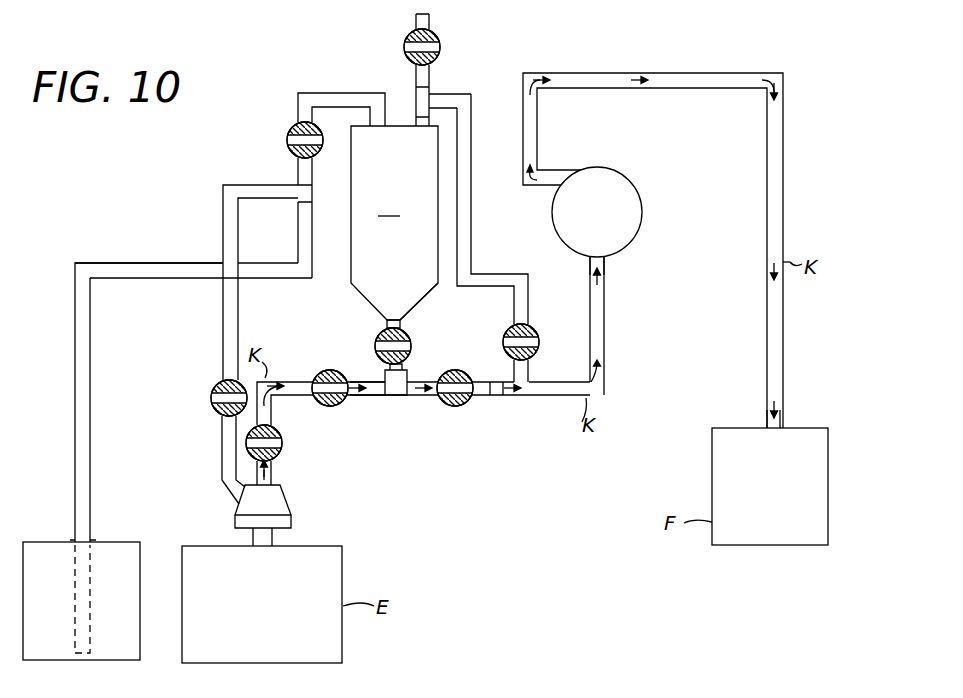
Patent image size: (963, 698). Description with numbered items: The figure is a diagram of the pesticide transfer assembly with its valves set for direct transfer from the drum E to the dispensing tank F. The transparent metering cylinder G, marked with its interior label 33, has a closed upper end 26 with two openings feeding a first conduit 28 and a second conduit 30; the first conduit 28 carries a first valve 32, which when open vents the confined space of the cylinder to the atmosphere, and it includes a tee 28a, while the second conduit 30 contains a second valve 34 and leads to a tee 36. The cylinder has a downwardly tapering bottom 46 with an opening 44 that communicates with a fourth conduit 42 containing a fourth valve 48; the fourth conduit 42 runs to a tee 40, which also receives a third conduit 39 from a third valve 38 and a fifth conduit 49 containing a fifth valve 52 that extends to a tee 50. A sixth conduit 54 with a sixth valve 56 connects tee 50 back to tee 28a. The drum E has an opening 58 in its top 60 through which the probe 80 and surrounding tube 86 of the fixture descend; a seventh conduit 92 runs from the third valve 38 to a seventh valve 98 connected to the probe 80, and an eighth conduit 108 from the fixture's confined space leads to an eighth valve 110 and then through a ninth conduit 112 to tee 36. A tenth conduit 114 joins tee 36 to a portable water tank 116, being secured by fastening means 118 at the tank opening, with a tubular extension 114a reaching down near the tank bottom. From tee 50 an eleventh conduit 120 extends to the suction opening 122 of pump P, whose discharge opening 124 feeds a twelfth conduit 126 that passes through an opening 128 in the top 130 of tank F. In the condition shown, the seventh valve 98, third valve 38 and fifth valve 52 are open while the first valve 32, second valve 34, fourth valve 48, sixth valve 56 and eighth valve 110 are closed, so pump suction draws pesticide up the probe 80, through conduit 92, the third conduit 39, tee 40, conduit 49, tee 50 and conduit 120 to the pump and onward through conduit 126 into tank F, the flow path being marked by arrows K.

The closed upper end 26 is at (394, 223).
The first conduit 28 is at (415, 70).
The tee 28a is at (433, 101).
The second conduit 30 is at (330, 92).
The first valve 32 is at (438, 38).
The gas space 33 is at (406, 248).
The second valve 34 is at (287, 150).
The tee 36 is at (297, 204).
The third valve 38 is at (324, 406).
The third conduit 39 is at (370, 397).
The tee 40 is at (398, 397).
The fourth conduit 42 is at (385, 326).
The opening 44 is at (403, 326).
The downwardly tapering bottom 46 is at (428, 292).
The fourth valve 48 is at (380, 362).
The fifth conduit 49 is at (430, 397).
The tee 50 is at (532, 397).
The fifth valve 52 is at (455, 406).
The sixth conduit 54 is at (473, 246).
The sixth valve 56 is at (531, 328).
The opening 58 is at (274, 542).
The top 60 is at (335, 548).
The probe 80 is at (274, 474).
The tube 86 is at (250, 535).
The seventh conduit 92 is at (287, 378).
The seventh valve 98 is at (284, 446).
The eighth conduit 108 is at (221, 472).
The eighth valve 110 is at (215, 415).
The ninth conduit 112 is at (222, 338).
The tenth conduit 114 is at (257, 282).
The tubular extension 114a is at (92, 656).
The water containing tank 116 is at (112, 541).
The fastening means 118 is at (70, 538).
The eleventh conduit 120 is at (606, 336).
The suction opening 122 is at (606, 258).
The discharge opening 124 is at (581, 173).
The twelfth conduit 126 is at (685, 92).
The opening 128 is at (782, 426).
The top 130 is at (824, 430).